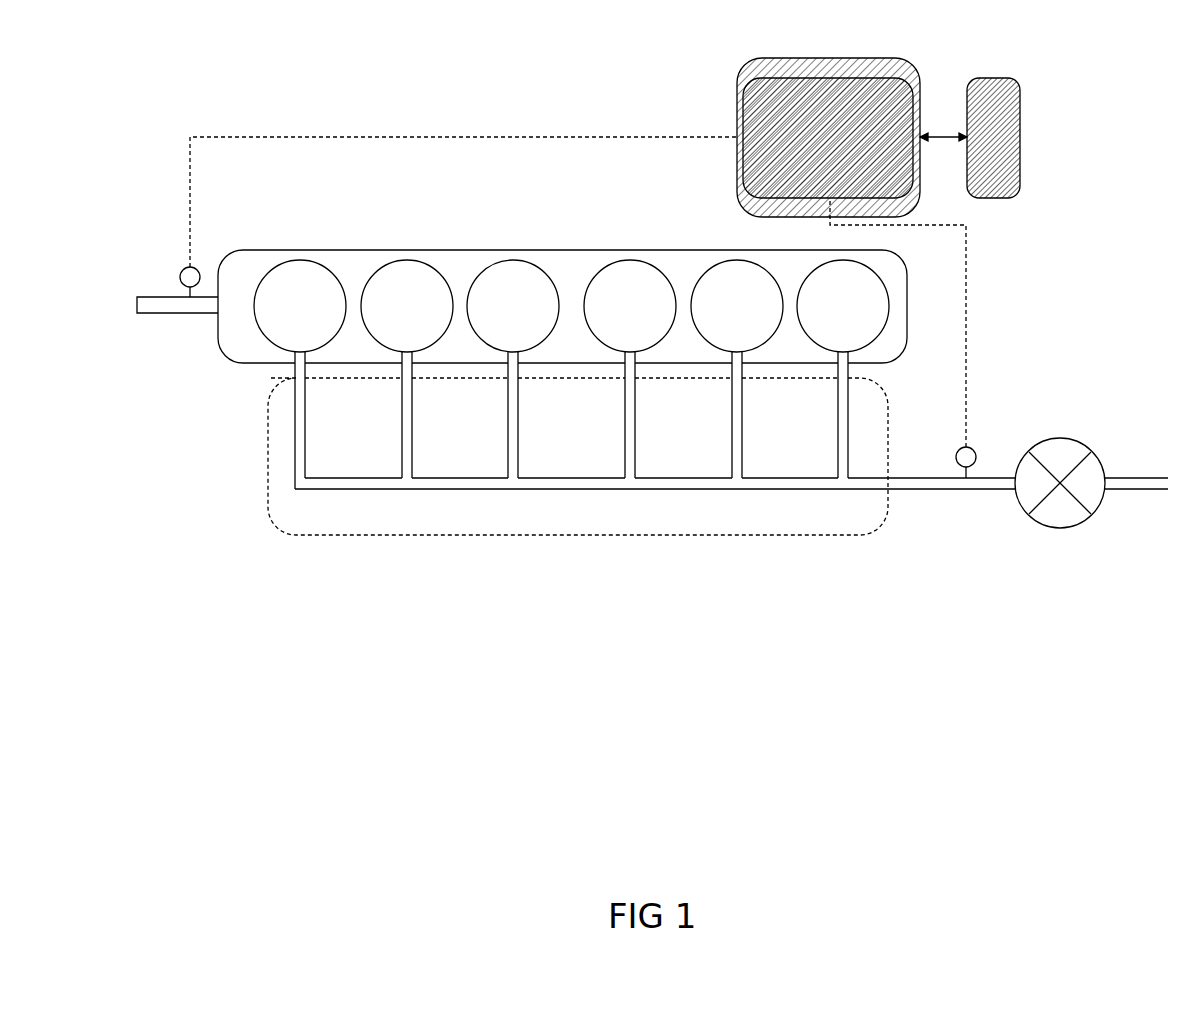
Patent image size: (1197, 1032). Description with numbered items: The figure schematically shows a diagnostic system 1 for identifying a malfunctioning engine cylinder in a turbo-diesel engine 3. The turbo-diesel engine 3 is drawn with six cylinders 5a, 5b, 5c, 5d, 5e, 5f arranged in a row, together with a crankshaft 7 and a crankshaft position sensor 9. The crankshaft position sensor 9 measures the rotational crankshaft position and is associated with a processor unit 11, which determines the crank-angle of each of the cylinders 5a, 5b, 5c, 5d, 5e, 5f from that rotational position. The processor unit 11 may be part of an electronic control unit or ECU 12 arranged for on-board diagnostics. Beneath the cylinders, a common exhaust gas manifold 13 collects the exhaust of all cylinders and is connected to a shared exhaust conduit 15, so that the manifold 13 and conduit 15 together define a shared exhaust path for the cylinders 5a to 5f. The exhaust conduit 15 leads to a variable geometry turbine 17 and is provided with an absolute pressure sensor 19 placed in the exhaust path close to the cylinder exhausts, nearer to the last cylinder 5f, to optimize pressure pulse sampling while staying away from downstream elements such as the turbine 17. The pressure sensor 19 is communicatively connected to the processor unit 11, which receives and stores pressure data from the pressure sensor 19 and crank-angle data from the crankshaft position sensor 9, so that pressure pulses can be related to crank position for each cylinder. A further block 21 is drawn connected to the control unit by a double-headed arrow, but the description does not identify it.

The diagnostic system 1 is at (913, 613).
The turbo-diesel engine 3 is at (258, 247).
The cylinder 5a is at (263, 338).
The cylinder 5b is at (370, 338).
The cylinder 5c is at (476, 338).
The cylinder 5d is at (593, 338).
The cylinder 5e is at (700, 338).
The cylinder 5f is at (806, 338).
The crankshaft 7 is at (155, 313).
The crankshaft position sensor 9 is at (183, 268).
The processor unit 11 is at (840, 78).
The electronic control unit 12 is at (737, 173).
The common exhaust gas manifold 13 is at (785, 536).
The shared exhaust conduit 15 is at (907, 477).
The variable geometry turbine 17 is at (1070, 440).
The absolute pressure sensor 19 is at (969, 446).
The memory 21 is at (975, 78).